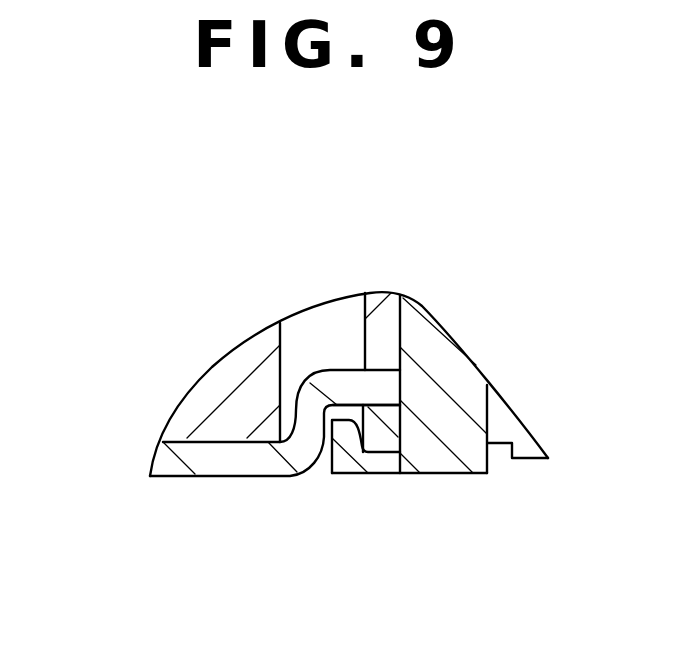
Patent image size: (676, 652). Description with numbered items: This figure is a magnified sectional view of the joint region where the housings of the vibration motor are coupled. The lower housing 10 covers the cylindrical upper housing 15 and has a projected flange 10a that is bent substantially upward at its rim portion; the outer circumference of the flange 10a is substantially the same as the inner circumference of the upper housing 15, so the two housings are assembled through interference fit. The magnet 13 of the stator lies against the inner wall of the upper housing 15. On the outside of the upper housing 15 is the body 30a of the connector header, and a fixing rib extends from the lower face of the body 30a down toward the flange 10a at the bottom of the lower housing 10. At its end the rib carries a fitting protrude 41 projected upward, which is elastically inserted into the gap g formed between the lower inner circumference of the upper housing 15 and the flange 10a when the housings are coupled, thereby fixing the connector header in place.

The lower housing 10 is at (183, 487).
The flange 10a is at (338, 382).
The magnet 13 is at (206, 388).
The upper housing 15 is at (390, 329).
The body 30a is at (461, 385).
The fitting protrude 41 is at (338, 453).
The gap g is at (357, 415).